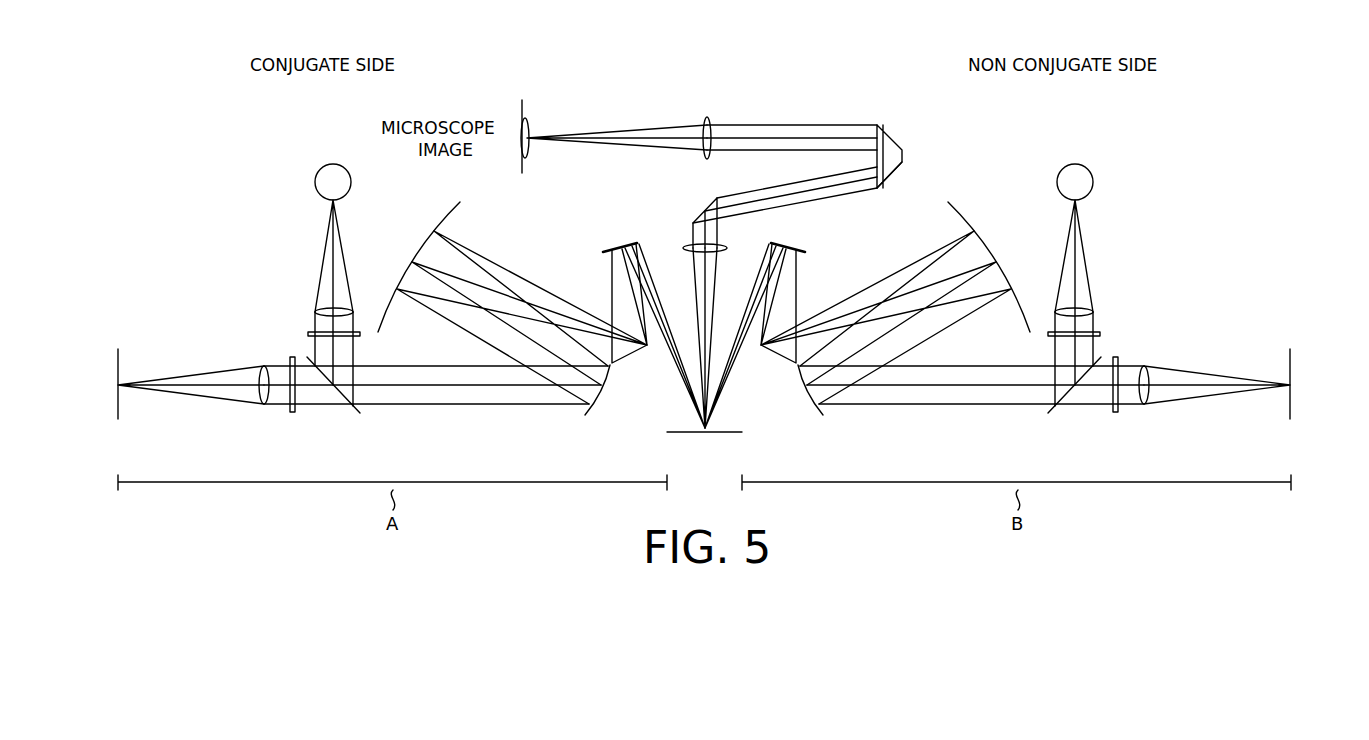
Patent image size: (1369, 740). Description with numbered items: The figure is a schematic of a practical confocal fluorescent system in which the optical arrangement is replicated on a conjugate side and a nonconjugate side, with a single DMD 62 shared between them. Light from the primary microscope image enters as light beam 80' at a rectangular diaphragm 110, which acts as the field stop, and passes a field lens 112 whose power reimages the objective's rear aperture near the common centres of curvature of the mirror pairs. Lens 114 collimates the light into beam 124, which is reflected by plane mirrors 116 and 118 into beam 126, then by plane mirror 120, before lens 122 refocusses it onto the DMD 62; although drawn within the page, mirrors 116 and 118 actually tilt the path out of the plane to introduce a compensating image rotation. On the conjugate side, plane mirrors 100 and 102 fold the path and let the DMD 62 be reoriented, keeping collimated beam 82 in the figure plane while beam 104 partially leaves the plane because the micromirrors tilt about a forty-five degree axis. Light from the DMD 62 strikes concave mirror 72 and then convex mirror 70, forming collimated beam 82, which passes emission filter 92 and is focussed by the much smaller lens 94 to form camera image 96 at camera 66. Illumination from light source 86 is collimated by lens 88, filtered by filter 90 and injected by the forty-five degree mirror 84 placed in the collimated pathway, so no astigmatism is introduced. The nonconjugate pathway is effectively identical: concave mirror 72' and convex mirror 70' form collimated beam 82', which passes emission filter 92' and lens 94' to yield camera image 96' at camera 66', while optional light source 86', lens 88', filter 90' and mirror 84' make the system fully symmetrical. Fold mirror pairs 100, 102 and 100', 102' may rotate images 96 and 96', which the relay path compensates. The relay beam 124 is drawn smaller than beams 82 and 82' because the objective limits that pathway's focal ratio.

The DMD 62 is at (723, 436).
The camera 66 is at (90, 382).
The camera 66' is at (1323, 382).
The convex mirror 70 is at (610, 408).
The convex mirror 70' is at (799, 408).
The concave mirror 72 is at (512, 291).
The concave mirror 72' is at (895, 291).
The light beam 80' is at (617, 116).
The collimated beam 82 is at (436, 411).
The collimated beam 82' is at (972, 411).
The 45° mirror 84 is at (333, 400).
The 45° mirror 84' is at (1077, 402).
The light source 86 is at (305, 274).
The nonconjugate light source 86' is at (1107, 274).
The lens 88 is at (313, 338).
The lens 88' is at (1099, 338).
The filter 90 is at (304, 333).
The filter 90' is at (1108, 333).
The emission filter 92 is at (271, 400).
The emission filter 92' is at (1142, 402).
The lens 94 is at (240, 371).
The lens 94' is at (1173, 371).
The camera image 96 is at (163, 385).
The camera image 96' is at (1250, 385).
The plane mirror 100 is at (636, 317).
The plane mirror 100' is at (778, 317).
The plane mirror 102 is at (643, 321).
The plane mirror 102' is at (766, 321).
The beam 104 is at (690, 401).
The rectangular diaphragm 110 is at (525, 106).
The field lens 112 is at (528, 150).
The lens 114 is at (712, 118).
The plane mirror 116 is at (877, 125).
The plane mirror 118 is at (880, 189).
The plane mirror 120 is at (710, 202).
The lens 122 is at (690, 245).
The beam 124 is at (825, 125).
The beam 126 is at (753, 188).